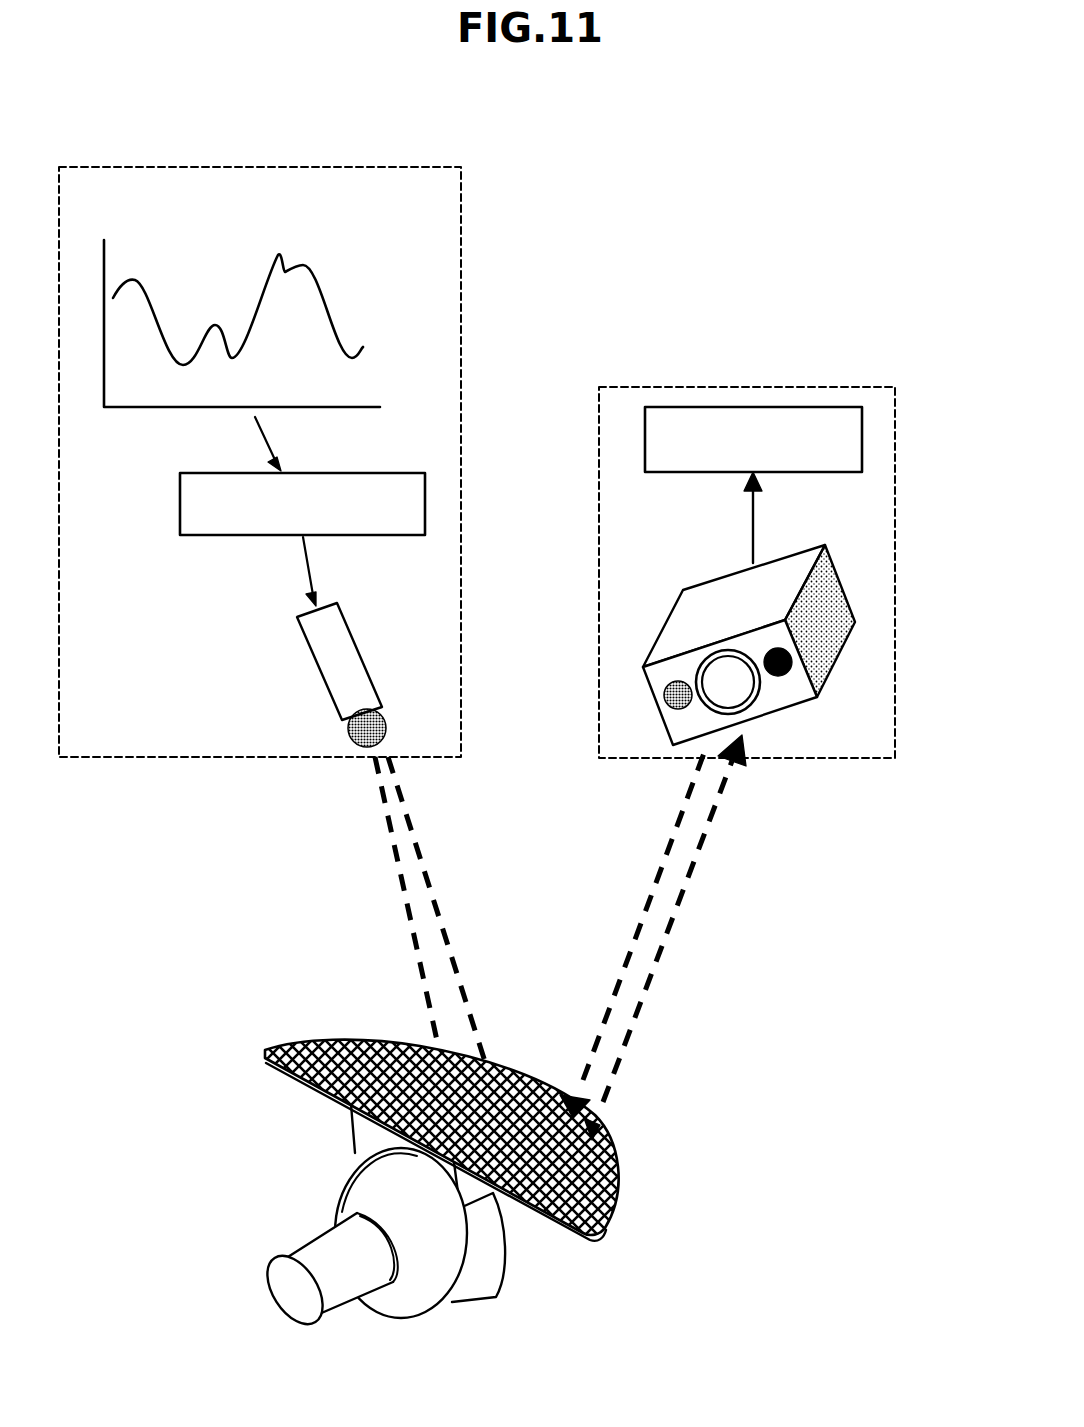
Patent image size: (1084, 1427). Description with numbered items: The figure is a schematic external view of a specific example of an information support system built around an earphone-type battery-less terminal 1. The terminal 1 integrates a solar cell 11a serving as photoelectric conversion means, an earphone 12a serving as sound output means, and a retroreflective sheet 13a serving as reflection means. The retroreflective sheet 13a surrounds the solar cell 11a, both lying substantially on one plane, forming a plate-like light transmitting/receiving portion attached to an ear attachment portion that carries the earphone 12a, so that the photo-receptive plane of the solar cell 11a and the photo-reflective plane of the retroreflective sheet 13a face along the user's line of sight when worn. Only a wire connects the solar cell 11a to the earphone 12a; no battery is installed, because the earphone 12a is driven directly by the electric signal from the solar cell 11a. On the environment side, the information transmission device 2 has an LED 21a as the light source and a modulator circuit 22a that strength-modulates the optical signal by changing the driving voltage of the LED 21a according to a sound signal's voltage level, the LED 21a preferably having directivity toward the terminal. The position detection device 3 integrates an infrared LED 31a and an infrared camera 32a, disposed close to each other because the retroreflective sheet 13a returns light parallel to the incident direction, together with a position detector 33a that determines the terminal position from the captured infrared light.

The battery-less terminal 1 is at (270, 1022).
The information transmission device 2 is at (462, 228).
The position detection device 3 is at (642, 388).
The solar cell 11a is at (515, 1066).
The earphone 12a is at (333, 1223).
The retroreflective sheet 13a is at (615, 1128).
The LED 21a is at (317, 668).
The modulator circuit 22a is at (302, 504).
The infrared LED 31a is at (665, 698).
The infrared camera 32a is at (738, 708).
The position detector 33a is at (753, 439).